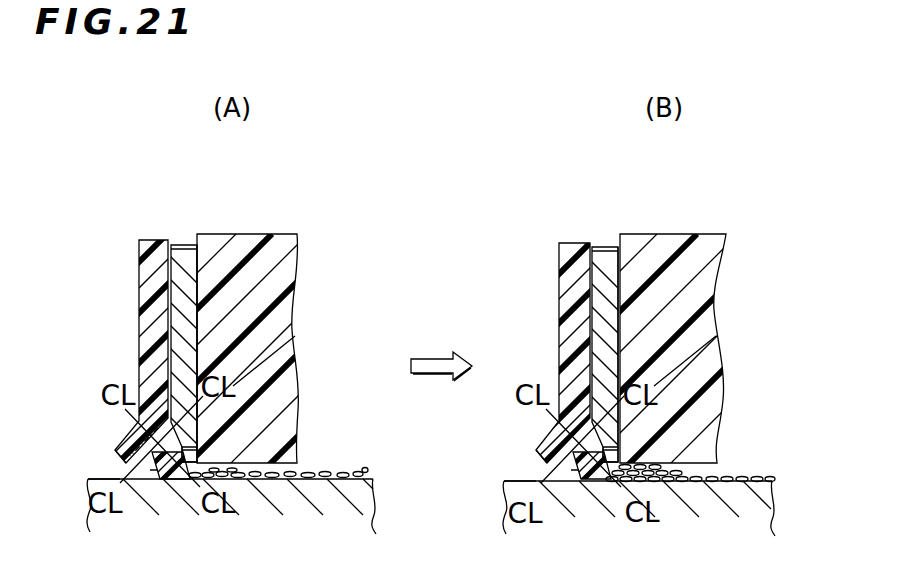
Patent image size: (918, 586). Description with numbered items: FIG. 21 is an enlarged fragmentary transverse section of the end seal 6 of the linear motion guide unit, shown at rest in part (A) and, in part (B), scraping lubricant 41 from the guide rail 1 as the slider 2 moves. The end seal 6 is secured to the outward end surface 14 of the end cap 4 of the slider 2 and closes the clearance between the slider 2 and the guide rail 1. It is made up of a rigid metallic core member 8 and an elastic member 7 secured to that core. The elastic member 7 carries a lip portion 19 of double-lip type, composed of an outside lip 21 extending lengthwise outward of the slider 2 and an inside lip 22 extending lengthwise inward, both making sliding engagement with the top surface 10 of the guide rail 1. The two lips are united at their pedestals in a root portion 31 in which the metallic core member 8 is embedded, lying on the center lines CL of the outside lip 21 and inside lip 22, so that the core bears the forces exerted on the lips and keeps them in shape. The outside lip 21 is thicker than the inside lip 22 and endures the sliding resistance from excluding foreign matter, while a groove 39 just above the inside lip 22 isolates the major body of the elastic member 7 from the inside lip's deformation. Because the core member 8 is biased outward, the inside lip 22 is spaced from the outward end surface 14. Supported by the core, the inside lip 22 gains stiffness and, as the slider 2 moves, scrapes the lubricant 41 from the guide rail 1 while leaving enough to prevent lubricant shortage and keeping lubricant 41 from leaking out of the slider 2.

The guide rail 1 is at (412, 504).
The slider 2 is at (284, 222).
The end cap 4 is at (267, 290).
The end seal 6 is at (138, 178).
The elastic member 7 is at (155, 255).
The core member 8 is at (181, 275).
The top surface 10 is at (110, 478).
The outward end surface 14 is at (198, 303).
The lip portion 19 is at (155, 472).
The outside lip 21 is at (134, 440).
The inside lip 22 is at (177, 481).
The root portion 31 is at (152, 449).
The groove 39 is at (193, 445).
The lubricant 41 is at (317, 470).